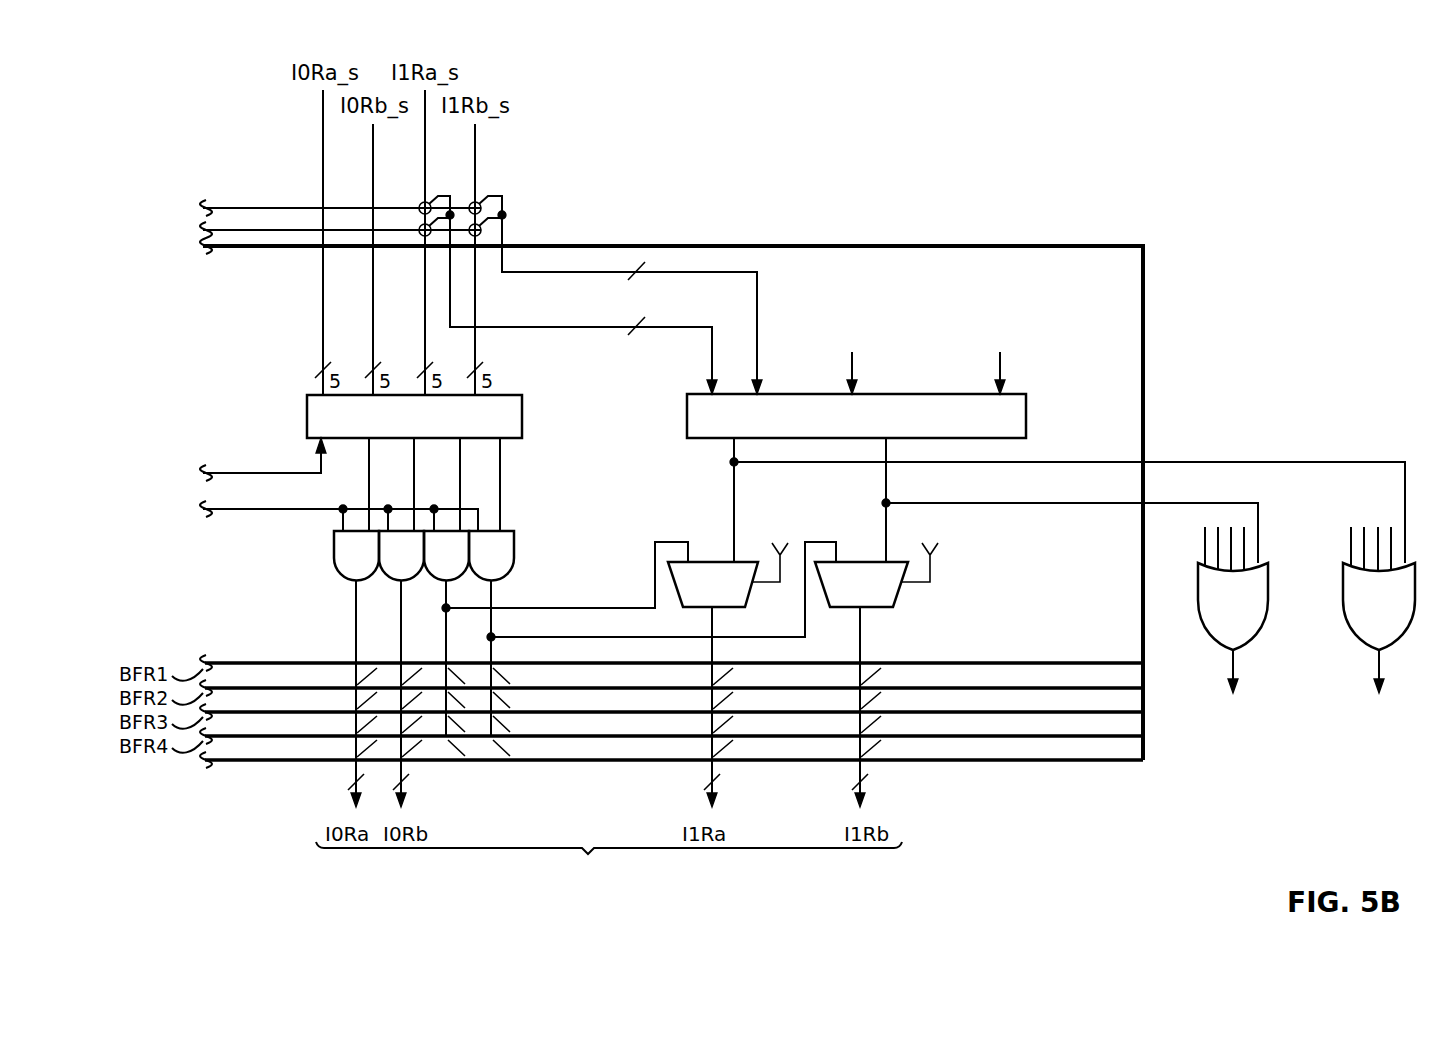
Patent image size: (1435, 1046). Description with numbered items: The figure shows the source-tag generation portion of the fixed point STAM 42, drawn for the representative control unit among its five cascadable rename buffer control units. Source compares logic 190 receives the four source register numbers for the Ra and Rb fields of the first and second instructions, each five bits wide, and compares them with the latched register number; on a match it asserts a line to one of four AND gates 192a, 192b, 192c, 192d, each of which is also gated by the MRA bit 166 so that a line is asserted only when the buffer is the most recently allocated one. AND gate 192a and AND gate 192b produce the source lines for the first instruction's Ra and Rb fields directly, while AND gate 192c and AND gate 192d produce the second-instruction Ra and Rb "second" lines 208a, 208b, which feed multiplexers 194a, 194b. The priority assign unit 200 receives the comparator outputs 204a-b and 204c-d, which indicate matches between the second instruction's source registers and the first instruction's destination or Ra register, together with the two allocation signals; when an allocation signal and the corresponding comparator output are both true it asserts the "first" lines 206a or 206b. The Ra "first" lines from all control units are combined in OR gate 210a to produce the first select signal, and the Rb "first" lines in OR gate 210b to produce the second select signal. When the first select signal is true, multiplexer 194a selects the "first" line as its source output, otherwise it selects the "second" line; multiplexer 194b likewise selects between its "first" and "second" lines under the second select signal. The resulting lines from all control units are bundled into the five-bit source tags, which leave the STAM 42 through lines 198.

The fixed point STAM 42 is at (1053, 246).
The MRA bit 166 is at (262, 512).
The source compares logic 190 is at (522, 440).
The AND gate 192a is at (334, 548).
The AND gate 192b is at (401, 583).
The AND gate 192c is at (463, 558).
The AND gate 192d is at (512, 553).
The multiplexer 194a is at (729, 662).
The multiplexer 194b is at (878, 662).
The lines 198 is at (660, 878).
The priority assign unit 200 is at (1016, 393).
The comparator outputs 204a-b is at (487, 327).
The comparator outputs 204c-d is at (512, 232).
The I1Ra_first_0 line 206a is at (1240, 463).
The I1Rb_first_0 line 206b is at (1260, 550).
The I1Ra_second_0 line 208a is at (655, 542).
The I1Rb_second_0 line 208b is at (805, 542).
The OR gate 210a is at (1379, 628).
The OR gate 210b is at (1233, 628).